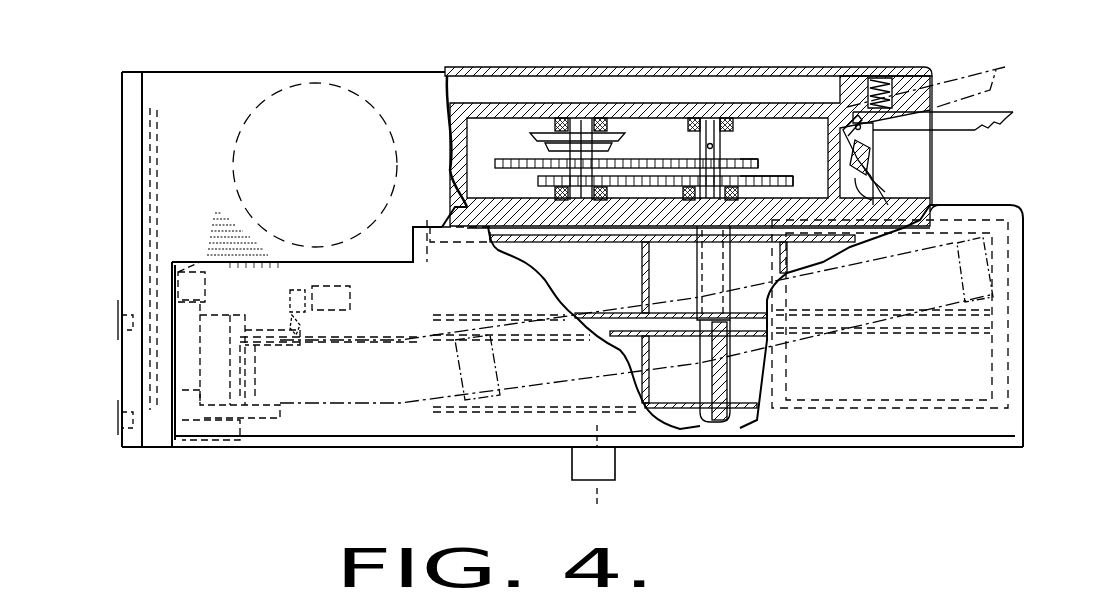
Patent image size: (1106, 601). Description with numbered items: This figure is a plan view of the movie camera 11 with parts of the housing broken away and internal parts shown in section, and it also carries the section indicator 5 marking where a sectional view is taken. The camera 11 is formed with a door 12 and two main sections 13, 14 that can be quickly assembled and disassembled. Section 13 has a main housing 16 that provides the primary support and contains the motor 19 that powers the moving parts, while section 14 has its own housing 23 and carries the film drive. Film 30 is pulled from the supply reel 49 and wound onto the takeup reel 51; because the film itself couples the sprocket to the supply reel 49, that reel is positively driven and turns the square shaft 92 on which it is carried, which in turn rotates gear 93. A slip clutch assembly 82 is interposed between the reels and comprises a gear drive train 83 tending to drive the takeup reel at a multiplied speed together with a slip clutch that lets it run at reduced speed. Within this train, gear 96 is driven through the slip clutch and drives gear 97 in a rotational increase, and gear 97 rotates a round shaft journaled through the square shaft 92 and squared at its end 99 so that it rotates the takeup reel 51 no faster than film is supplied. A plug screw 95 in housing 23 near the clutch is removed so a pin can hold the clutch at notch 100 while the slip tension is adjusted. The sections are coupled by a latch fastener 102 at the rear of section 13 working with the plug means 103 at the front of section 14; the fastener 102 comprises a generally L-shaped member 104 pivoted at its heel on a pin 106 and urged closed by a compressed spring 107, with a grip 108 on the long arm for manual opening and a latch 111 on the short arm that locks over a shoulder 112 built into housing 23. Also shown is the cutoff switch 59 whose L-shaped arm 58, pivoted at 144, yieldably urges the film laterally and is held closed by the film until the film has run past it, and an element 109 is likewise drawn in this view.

The section line 5- 5 is at (597, 420).
The movie camera 11 is at (100, 187).
The door 12 is at (912, 600).
The main section 13 is at (933, 66).
The main section 14 is at (1028, 422).
The main housing 16 is at (133, 92).
The motor 19 is at (368, 105).
The housing 23 is at (932, 213).
The film 30 is at (362, 400).
The supply reel 49 is at (642, 272).
The takeup reel 51 is at (642, 352).
The arm 58 is at (241, 370).
The cutoff switch 59 is at (318, 325).
The slip clutch assembly 82 is at (632, 140).
The gear drive train 83 is at (762, 148).
The square shaft 92 is at (730, 268).
The gear 93 is at (762, 173).
The plug screw 95 is at (548, 118).
The gear 96 is at (650, 156).
The gear 97 is at (735, 158).
The squared end 99 is at (725, 430).
The notch 100 is at (548, 120).
The latch fastener 102 is at (1007, 135).
The plug means 103 is at (195, 293).
The L-shaped member 104 is at (880, 130).
The pin 106 is at (850, 126).
The compressed spring 107 is at (886, 80).
The grip 108 is at (1010, 116).
The pawl 109 is at (873, 172).
The latch 111 is at (877, 198).
The shoulder 112 is at (190, 282).
The pivot 144 is at (299, 338).